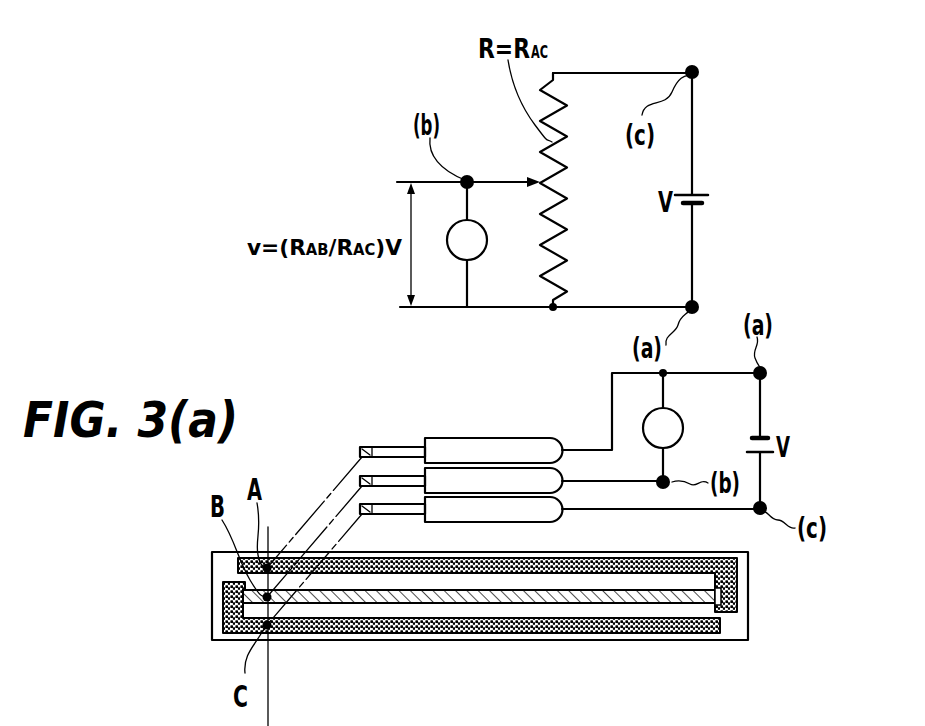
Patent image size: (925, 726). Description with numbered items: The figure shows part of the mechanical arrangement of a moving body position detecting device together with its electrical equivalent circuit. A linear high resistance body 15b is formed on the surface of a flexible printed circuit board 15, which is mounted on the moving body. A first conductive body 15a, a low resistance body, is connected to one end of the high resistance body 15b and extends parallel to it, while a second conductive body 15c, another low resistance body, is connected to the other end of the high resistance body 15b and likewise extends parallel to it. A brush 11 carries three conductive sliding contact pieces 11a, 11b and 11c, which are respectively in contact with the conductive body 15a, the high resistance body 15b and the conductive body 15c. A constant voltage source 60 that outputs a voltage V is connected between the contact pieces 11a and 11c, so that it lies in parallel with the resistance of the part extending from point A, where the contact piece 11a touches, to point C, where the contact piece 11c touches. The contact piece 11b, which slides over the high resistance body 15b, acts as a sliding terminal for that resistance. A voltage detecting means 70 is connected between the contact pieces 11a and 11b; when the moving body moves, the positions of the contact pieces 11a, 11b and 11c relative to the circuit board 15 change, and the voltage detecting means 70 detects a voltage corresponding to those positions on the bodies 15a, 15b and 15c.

The brush 11 is at (458, 435).
The conductive sliding contact piece 11a is at (450, 445).
The conductive sliding contact piece 11b is at (495, 475).
The conductive sliding contact piece 11c is at (532, 508).
The flexible printed circuit board 15 is at (514, 629).
The first conductive body 15a is at (520, 566).
The high resistance body 15b is at (587, 598).
The second conductive body 15c is at (657, 627).
The constant voltage source 60 is at (707, 203).
The voltage detecting means 70 is at (488, 242).